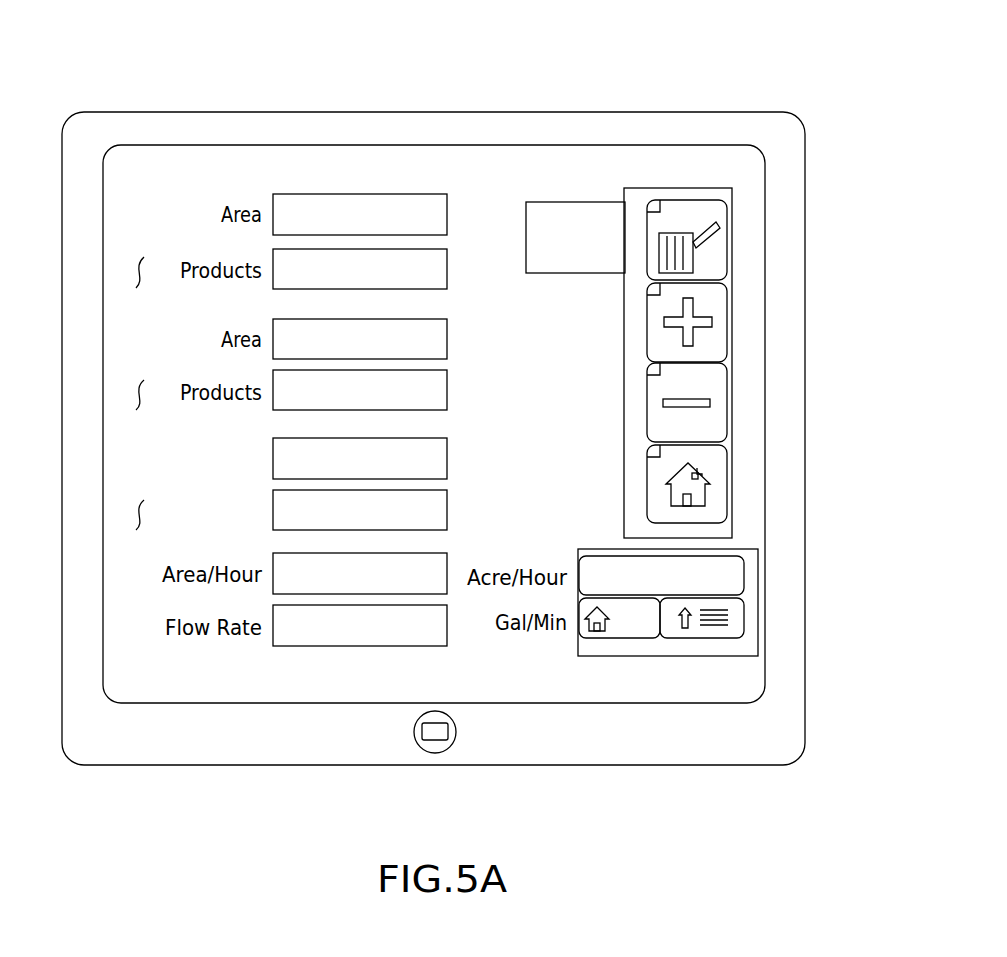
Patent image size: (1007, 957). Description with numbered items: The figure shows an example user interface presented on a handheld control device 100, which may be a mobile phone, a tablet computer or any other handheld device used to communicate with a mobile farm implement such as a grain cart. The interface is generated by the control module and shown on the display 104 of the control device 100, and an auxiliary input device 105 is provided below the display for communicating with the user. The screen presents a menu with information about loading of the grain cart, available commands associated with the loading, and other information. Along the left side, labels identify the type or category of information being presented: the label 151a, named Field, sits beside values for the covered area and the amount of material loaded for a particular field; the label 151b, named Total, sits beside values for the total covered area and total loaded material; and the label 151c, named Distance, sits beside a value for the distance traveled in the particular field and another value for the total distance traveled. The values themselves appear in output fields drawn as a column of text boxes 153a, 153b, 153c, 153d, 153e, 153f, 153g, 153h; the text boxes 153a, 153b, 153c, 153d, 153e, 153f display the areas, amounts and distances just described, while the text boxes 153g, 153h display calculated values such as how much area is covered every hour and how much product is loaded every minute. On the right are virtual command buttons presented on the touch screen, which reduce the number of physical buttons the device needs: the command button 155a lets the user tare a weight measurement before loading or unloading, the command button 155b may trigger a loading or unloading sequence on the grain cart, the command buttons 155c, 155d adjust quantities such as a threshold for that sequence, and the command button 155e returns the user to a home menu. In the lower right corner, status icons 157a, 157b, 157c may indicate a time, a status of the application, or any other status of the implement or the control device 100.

The handheld control device 100 is at (272, 112).
The display 104 is at (360, 160).
The auxiliary input device 105 is at (432, 753).
The label 151a is at (137, 273).
The label 151b is at (140, 398).
The label 151c is at (156, 518).
The text box 153a is at (447, 195).
The text box 153b is at (447, 262).
The text box 153c is at (447, 345).
The text box 153d is at (447, 378).
The text box 153e is at (447, 458).
The text box 153f is at (447, 505).
The text box 153g is at (273, 553).
The text box 153h is at (273, 646).
The command button 155a is at (573, 202).
The command button 155b is at (685, 200).
The command button 155c is at (647, 304).
The command button 155d is at (647, 410).
The command button 155e is at (647, 483).
The status icon 157a is at (593, 550).
The status icon 157b is at (597, 640).
The status icon 157c is at (693, 640).